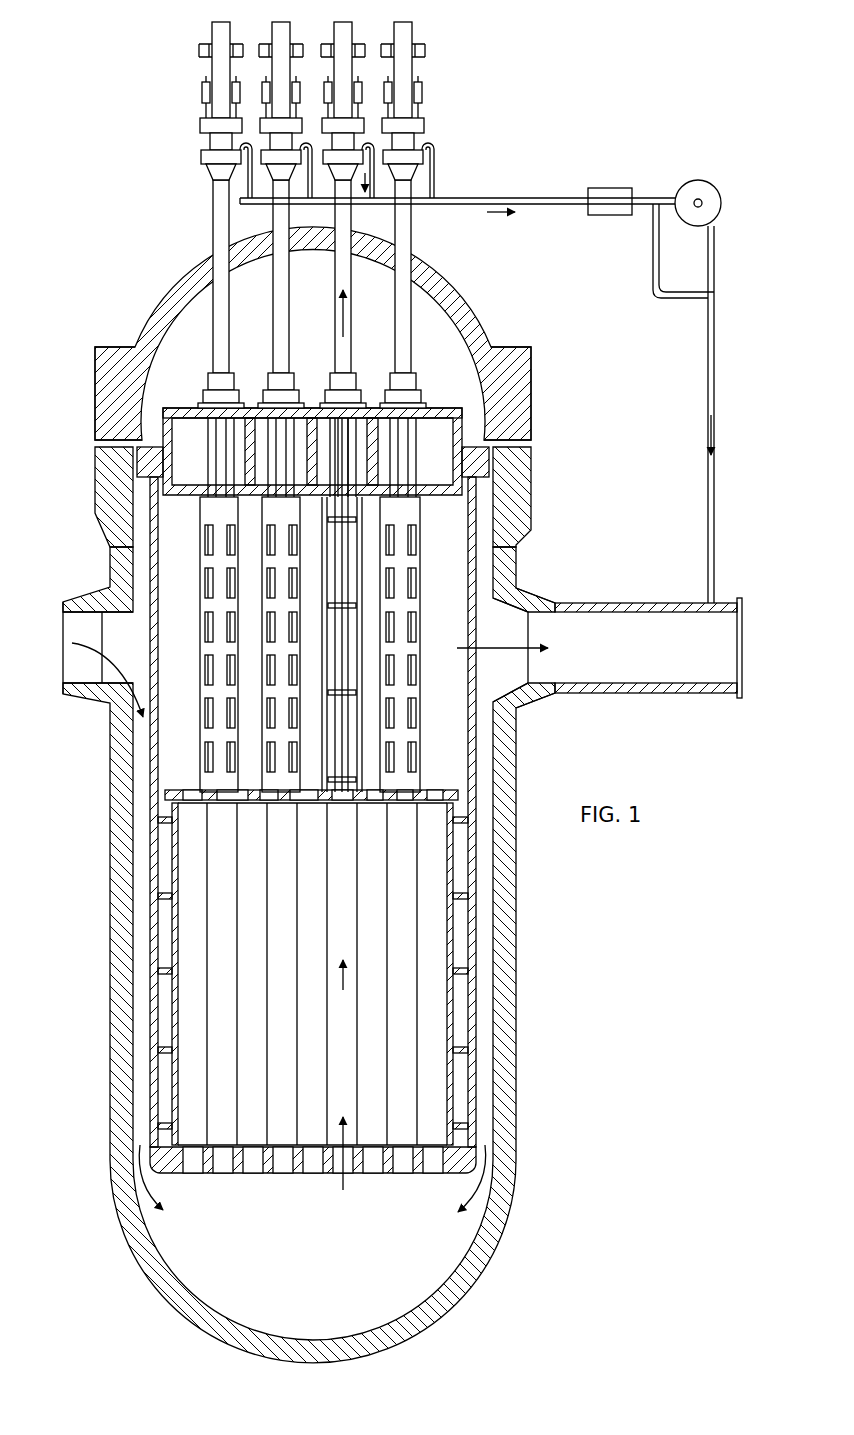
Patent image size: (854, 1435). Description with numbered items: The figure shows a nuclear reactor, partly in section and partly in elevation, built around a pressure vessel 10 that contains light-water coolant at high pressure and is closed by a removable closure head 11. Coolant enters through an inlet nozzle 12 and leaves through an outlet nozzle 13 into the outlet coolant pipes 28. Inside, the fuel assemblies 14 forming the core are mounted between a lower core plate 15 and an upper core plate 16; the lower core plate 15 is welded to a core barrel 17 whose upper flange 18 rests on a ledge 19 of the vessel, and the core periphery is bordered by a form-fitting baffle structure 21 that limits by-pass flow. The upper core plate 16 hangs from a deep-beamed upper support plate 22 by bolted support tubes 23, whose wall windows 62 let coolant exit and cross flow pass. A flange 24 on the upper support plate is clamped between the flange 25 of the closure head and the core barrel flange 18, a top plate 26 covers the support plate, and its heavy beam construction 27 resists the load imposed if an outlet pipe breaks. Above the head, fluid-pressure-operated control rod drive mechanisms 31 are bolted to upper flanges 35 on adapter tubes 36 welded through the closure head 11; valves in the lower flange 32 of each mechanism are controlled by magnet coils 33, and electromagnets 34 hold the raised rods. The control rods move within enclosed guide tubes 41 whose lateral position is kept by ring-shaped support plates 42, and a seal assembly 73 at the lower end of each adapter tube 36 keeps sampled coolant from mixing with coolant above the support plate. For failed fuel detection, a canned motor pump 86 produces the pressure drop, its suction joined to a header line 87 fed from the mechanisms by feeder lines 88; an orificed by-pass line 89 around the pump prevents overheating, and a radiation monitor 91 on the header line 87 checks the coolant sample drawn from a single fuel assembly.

The pressure vessel 10 is at (548, 957).
The closure head 11 is at (450, 282).
The inlet nozzle 12 is at (62, 655).
The outlet nozzle 13 is at (535, 598).
The fuel assemblies 14 is at (272, 857).
The lower core plate 15 is at (258, 1175).
The upper core plate 16 is at (457, 790).
The core barrel 17 is at (478, 1008).
The upper flange 18 is at (487, 470).
The ledge 19 is at (527, 490).
The baffle structure 21 is at (450, 1078).
The upper support plate 22 is at (466, 426).
The support tubes 23 is at (421, 562).
The flange 24 is at (460, 456).
The flange 25 is at (520, 347).
The top plate 26 is at (445, 408).
The heavy beam construction 27 is at (383, 452).
The outlet coolant pipes 28 is at (650, 693).
The control rod drive mechanisms 31 is at (290, 30).
The lower flange 32 is at (199, 125).
The magnet coils 33 is at (421, 90).
The electromagnets 34 is at (203, 46).
The upper flanges 35 is at (201, 160).
The adapter tubes 36 is at (213, 240).
The guide tubes 41 is at (345, 652).
The support plates 42 is at (360, 605).
The windows 62 is at (413, 700).
The seal assembly 73 is at (360, 392).
The canned motor pump 86 is at (716, 183).
The header line 87 is at (528, 197).
The feeder lines 88 is at (435, 188).
The by-pass line 89 is at (654, 255).
The radiation monitor 91 is at (610, 188).